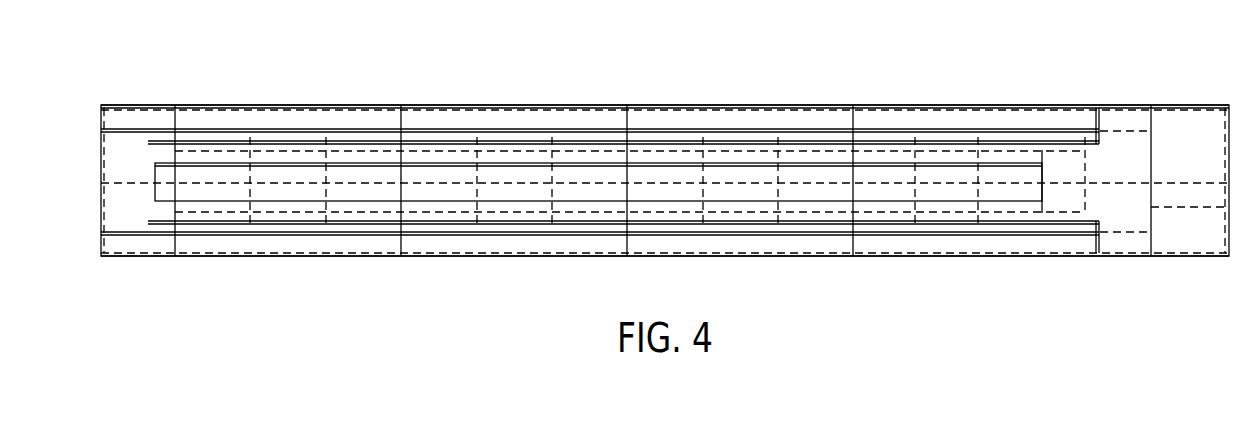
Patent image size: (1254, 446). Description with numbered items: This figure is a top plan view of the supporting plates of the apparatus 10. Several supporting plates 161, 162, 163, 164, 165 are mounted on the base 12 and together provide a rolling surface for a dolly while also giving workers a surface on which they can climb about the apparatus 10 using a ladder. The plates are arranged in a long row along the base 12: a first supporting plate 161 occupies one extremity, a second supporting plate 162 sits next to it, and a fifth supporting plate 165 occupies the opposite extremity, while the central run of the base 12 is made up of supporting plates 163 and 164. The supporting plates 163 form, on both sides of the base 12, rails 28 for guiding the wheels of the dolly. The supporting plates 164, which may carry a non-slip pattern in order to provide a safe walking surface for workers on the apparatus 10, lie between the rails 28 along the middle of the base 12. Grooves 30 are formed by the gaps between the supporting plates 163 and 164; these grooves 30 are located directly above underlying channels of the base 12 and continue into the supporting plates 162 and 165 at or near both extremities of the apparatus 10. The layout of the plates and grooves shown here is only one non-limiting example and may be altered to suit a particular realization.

The apparatus 10 is at (737, 67).
The base 12 is at (121, 107).
The rails 28 is at (344, 130).
The grooves 30 is at (284, 130).
The supporting plate 161 is at (1192, 118).
The supporting plate 162 is at (1119, 118).
The supporting plates 163 is at (210, 118).
The supporting plates 164 is at (350, 188).
The supporting plate 165 is at (110, 115).